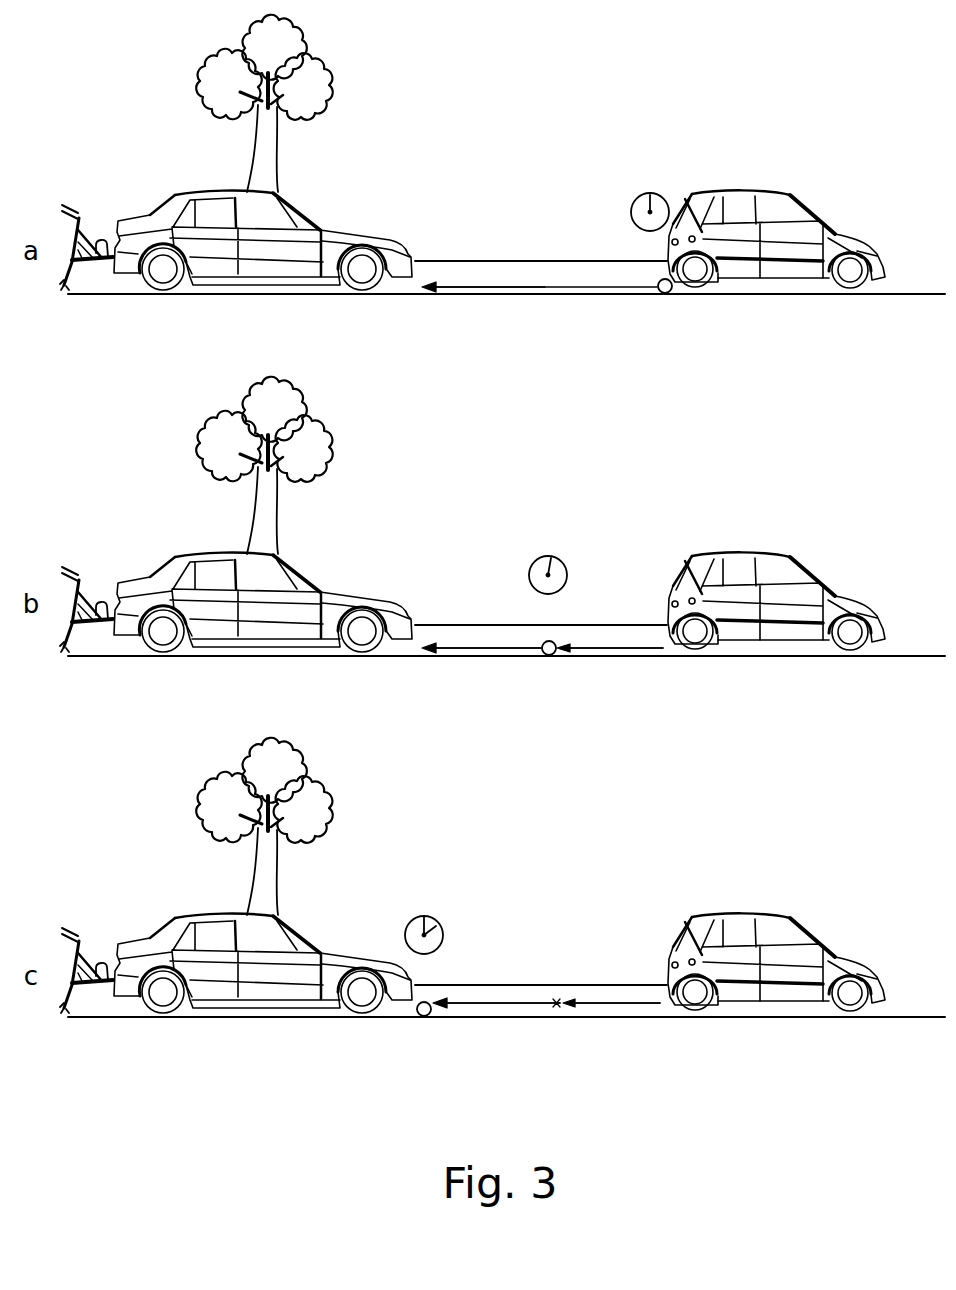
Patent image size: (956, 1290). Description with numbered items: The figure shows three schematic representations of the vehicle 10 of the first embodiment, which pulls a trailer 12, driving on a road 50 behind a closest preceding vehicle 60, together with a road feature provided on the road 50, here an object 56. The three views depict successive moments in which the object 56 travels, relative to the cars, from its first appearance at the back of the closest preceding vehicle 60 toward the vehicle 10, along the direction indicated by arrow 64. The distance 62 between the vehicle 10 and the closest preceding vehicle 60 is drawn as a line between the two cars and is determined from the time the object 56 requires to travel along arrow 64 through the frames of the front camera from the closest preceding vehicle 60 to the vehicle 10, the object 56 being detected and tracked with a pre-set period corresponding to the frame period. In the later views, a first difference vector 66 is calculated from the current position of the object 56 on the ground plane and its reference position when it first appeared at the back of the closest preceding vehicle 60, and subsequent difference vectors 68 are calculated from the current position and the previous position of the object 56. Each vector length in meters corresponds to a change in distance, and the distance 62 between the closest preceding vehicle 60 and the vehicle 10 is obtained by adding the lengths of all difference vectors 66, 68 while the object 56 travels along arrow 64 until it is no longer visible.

The vehicle 10 is at (330, 230).
The trailer 12 is at (79, 218).
The road 50 is at (563, 290).
The object 56 is at (665, 294).
The closest preceding vehicle 60 is at (805, 227).
The distance 62 is at (525, 261).
The arrow 64 is at (485, 283).
The first difference vector 66 is at (608, 656).
The subsequent difference vector 68 is at (482, 656).